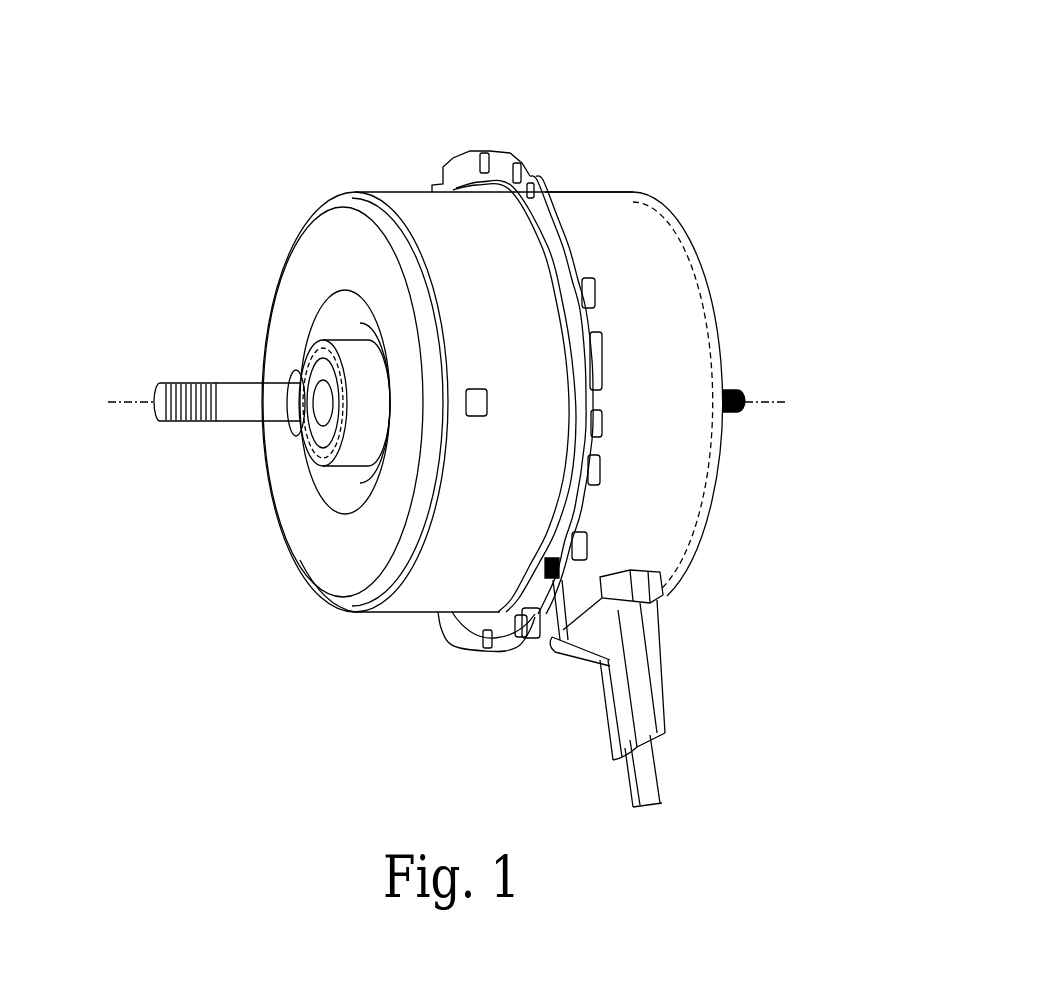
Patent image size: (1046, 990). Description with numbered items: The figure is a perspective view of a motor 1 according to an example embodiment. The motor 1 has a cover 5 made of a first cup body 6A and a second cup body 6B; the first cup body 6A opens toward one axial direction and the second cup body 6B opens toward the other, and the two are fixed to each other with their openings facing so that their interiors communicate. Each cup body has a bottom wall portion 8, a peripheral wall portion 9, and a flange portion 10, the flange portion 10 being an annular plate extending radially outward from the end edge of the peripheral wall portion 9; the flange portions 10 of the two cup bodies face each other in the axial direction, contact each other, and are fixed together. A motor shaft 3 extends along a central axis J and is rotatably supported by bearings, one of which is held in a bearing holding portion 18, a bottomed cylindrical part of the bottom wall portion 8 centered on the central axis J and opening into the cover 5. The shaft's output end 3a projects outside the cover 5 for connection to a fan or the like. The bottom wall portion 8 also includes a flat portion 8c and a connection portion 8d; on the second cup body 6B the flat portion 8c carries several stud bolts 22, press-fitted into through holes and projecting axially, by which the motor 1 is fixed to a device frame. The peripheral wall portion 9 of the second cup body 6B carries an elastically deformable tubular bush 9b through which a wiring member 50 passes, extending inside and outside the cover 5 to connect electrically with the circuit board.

The motor 1 is at (713, 80).
The motor shaft 3 is at (238, 393).
The output end 3a is at (194, 422).
The central axis J is at (130, 400).
The cover 5 is at (623, 76).
The first cup body 6A is at (413, 190).
The second cup body 6B is at (592, 190).
The bottom wall portion 8 is at (313, 263).
The flat portion 8c is at (345, 567).
The connection portion 8d is at (330, 510).
The peripheral wall portion 9 is at (448, 567).
The bush 9b is at (640, 684).
The flange portion 10 is at (553, 238).
The bearing holding portion 18 is at (347, 502).
The stud bolt 22 is at (733, 386).
The wiring member 50 is at (657, 768).